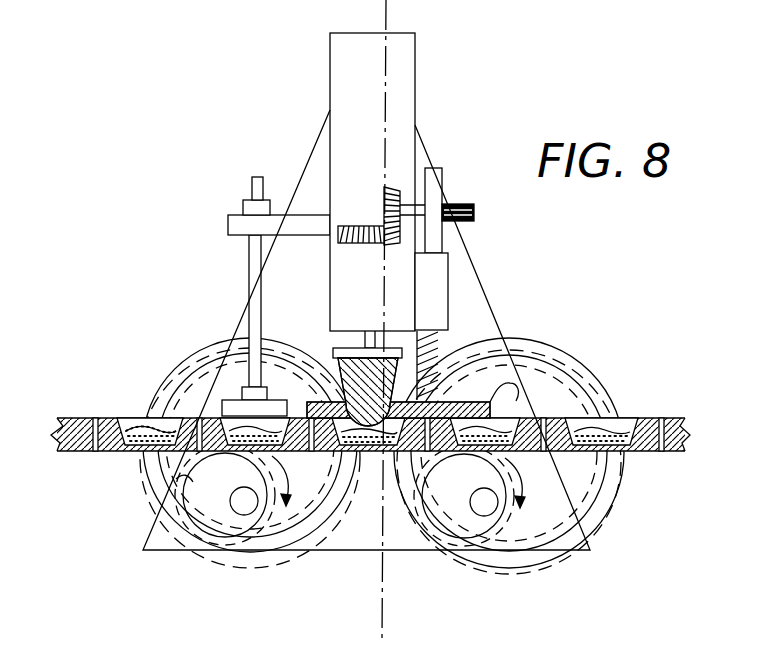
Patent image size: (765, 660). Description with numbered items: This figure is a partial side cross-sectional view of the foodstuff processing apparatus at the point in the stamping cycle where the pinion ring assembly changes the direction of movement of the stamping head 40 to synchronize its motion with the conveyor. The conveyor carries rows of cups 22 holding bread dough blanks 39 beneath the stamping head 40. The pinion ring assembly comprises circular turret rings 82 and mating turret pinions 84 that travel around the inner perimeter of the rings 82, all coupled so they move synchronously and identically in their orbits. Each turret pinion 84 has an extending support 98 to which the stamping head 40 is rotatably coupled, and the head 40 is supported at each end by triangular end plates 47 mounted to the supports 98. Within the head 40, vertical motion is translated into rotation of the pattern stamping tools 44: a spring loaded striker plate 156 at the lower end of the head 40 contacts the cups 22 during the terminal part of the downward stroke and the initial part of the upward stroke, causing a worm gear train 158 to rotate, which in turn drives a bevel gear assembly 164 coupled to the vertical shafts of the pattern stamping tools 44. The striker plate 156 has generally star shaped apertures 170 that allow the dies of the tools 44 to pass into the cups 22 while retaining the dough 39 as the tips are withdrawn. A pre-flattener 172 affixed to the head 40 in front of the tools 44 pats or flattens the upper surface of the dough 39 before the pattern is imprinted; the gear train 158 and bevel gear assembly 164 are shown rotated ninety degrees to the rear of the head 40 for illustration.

The cups 22 is at (371, 435).
The bread dough blanks 39 is at (628, 420).
The stamping head 40 is at (400, 118).
The pattern stamping tools 44 is at (440, 348).
The end plates 47 is at (484, 294).
The turret rings 82 is at (256, 568).
The turret pinions 84 is at (180, 480).
The extending support 98 is at (242, 510).
The striker plate 156 is at (516, 385).
The worm gear train 158 is at (437, 270).
The bevel gear assembly 164 is at (360, 226).
The apertures 170 is at (386, 425).
The pre-flatteners 172 is at (250, 290).